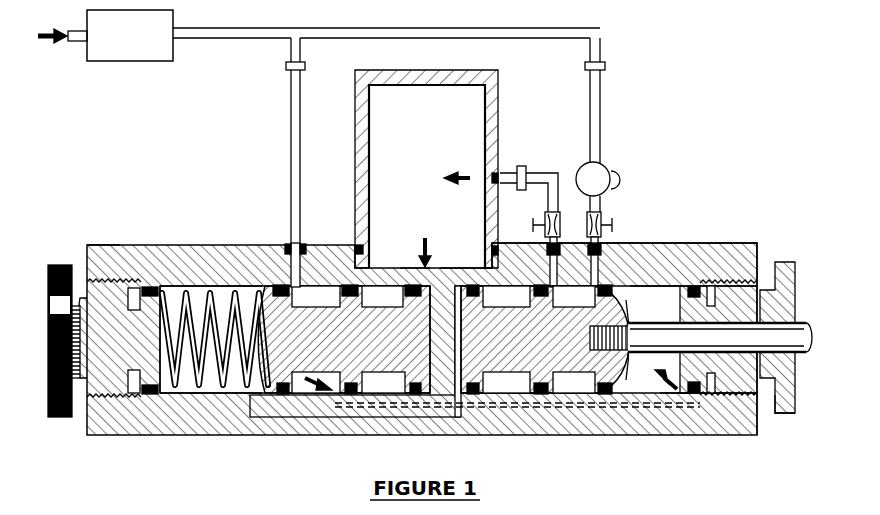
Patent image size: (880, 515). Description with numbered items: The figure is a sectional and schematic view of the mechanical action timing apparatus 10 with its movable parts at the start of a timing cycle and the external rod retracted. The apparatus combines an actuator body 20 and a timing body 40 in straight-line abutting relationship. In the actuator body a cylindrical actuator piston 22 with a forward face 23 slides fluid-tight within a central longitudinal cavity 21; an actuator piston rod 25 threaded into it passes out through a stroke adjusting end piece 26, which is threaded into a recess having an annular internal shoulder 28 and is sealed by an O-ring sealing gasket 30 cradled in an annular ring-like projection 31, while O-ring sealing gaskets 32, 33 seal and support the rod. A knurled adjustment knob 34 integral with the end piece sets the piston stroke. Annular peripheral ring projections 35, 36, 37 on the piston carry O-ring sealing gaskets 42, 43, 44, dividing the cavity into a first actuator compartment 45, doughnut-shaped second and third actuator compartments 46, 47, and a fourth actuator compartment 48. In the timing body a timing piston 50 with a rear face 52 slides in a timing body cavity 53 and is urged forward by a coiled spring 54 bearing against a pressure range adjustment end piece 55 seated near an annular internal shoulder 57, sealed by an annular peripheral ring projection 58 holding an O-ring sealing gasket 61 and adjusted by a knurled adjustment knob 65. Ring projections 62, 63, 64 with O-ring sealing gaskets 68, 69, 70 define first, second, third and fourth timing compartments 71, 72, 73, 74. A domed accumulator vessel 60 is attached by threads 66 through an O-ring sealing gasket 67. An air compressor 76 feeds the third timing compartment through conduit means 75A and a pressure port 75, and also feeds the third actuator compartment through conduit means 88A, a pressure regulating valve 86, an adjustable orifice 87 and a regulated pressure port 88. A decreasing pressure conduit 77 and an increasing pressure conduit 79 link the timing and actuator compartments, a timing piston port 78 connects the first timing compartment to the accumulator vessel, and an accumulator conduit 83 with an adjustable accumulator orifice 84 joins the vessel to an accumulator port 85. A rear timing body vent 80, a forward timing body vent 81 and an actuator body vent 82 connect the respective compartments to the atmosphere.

The mechanical action timing apparatus 10 is at (131, 219).
The actuator body 20 is at (669, 243).
The central longitudinal cavity 21 is at (664, 305).
The actuator piston 22 is at (545, 339).
The forward face 23 is at (632, 314).
The actuator piston rod 25 is at (795, 322).
The stroke adjusting end piece 26 is at (718, 339).
The annular internal shoulder 28 is at (704, 283).
The O-ring sealing gasket 30 is at (715, 397).
The annular ring-like projection 31 is at (668, 396).
The O-ring sealing gasket 32 is at (718, 337).
The O-ring sealing gasket 33 is at (782, 337).
The knurled adjustment knob 34 is at (780, 414).
The annular peripheral ring projection 35 is at (472, 298).
The annular peripheral ring projection 36 is at (541, 298).
The annular peripheral ring projection 37 is at (606, 330).
The timing body 40 is at (233, 245).
The O-ring sealing gasket 42 is at (484, 268).
The O-ring sealing gasket 43 is at (545, 285).
The O-ring sealing gasket 44 is at (606, 260).
The first actuator compartment 45 is at (460, 372).
The second actuator compartment 46 is at (506, 296).
The third actuator compartment 47 is at (574, 296).
The fourth actuator compartment 48 is at (572, 379).
The timing piston 50 is at (344, 339).
The rear face 52 is at (253, 290).
The timing body cavity 53 is at (185, 285).
The coiled spring 54 is at (222, 393).
The pressure range adjustment end piece 55 is at (130, 333).
The annular internal shoulder 57 is at (136, 398).
The annular peripheral ring projection 58 is at (135, 280).
The accumulator vessel 60 is at (499, 141).
The O-ring sealing gasket 61 is at (149, 286).
The annular peripheral ring projection 62 is at (411, 298).
The annular peripheral ring projection 63 is at (351, 298).
The annular peripheral ring projection 64 is at (279, 298).
The knurled adjustment knob 65 is at (59, 417).
The threads 66 is at (356, 243).
The O-ring sealing gasket 67 is at (497, 250).
The O-ring sealing gasket 68 is at (418, 268).
The O-ring sealing gasket 69 is at (351, 383).
The O-ring sealing gasket 70 is at (282, 383).
The first timing compartment 71 is at (414, 383).
The second timing compartment 72 is at (382, 296).
The third timing compartment 73 is at (316, 296).
The fourth timing compartment 74 is at (215, 335).
The pressure port 75 is at (302, 252).
The conduit means 75A is at (291, 104).
The air compressor 76 is at (87, 62).
The decreasing pressure conduit 77 is at (596, 407).
The timing piston port 78 is at (437, 249).
The increasing pressure conduit 79 is at (250, 412).
The rear timing body vent 80 is at (197, 393).
The forward timing body vent 81 is at (363, 393).
The actuator body vent 82 is at (527, 393).
The accumulator conduit 83 is at (550, 171).
The adjustable accumulator orifice 84 is at (545, 222).
The accumulator port 85 is at (549, 270).
The pressure regulating valve 86 is at (606, 168).
The adjustable orifice 87 is at (612, 224).
The regulated pressure port 88 is at (605, 250).
The conduit means 88A is at (601, 96).